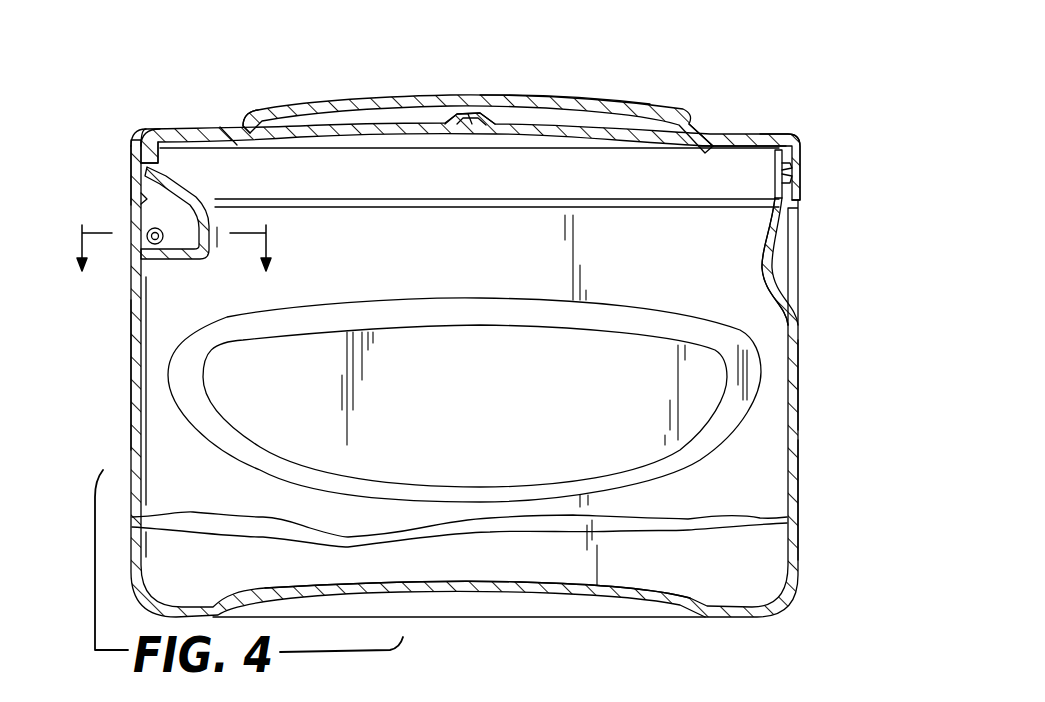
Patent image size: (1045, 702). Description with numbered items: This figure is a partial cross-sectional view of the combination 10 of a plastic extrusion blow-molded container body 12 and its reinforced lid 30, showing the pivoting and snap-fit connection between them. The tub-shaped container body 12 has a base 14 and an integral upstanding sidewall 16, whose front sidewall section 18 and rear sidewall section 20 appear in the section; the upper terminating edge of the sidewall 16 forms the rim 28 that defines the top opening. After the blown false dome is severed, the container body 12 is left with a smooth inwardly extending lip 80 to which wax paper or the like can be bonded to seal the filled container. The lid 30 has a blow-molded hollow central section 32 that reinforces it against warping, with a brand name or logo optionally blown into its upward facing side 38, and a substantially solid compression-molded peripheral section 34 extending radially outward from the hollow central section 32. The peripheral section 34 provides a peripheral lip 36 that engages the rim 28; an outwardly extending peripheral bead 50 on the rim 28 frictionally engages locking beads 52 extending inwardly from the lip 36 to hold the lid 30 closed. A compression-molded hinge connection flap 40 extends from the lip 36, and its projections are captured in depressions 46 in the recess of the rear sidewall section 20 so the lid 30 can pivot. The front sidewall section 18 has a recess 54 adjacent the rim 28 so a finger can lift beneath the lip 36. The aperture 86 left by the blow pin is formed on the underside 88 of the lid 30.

The combination 10 is at (736, 64).
The container body 12 is at (797, 427).
The base 14 is at (597, 587).
The sidewall 16 is at (793, 482).
The front sidewall section 18 is at (797, 377).
The rear sidewall section 20 is at (133, 367).
The rim 28 is at (773, 143).
The lid 30 is at (231, 118).
The hollow central section 32 is at (408, 97).
The peripheral section 34 is at (157, 128).
The peripheral lip 36 is at (133, 155).
The upward facing side 38 is at (523, 96).
The hinge connection flap 40 is at (137, 235).
The depressions 46 is at (165, 260).
The peripheral bead 50 is at (800, 168).
The locking beads 52 is at (800, 175).
The recess 54 is at (773, 262).
The inwardly extending lip 80 is at (743, 143).
The aperture 86 is at (472, 132).
The underside 88 is at (573, 138).